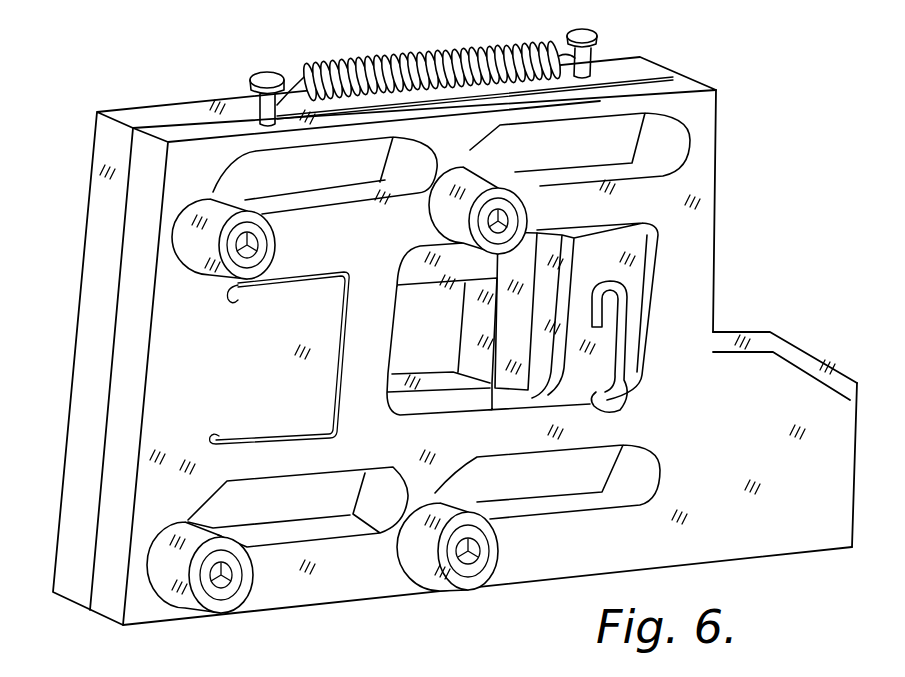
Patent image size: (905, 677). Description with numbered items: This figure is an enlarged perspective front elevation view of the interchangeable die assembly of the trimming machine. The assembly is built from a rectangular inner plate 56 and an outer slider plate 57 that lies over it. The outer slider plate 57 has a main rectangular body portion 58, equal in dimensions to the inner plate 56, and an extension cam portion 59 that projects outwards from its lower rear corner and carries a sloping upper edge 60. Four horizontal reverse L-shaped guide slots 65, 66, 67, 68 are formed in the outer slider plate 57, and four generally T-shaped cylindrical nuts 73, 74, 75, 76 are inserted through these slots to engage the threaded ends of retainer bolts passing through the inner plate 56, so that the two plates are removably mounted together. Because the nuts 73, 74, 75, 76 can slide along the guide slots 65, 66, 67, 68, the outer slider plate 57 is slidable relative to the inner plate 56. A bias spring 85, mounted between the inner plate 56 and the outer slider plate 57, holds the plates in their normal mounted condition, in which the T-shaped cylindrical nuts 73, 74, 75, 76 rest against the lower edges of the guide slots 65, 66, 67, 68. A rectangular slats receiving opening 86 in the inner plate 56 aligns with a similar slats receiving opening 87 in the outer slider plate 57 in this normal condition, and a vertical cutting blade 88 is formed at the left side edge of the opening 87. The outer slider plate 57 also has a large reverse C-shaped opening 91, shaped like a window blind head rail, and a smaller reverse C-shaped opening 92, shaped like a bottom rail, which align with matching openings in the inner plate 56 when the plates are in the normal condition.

The rectangular inner plate 56 is at (140, 107).
The outer slider plate 57 is at (140, 178).
The main rectangular body portion 58 is at (175, 188).
The extension cam portion 59 is at (830, 436).
The sloping upper edge 60 is at (797, 352).
The horizontal reverse L-shaped guide slot 65 is at (267, 163).
The horizontal reverse L-shaped guide slot 66 is at (630, 127).
The horizontal reverse L-shaped guide slot 67 is at (598, 500).
The horizontal reverse L-shaped guide slot 68 is at (328, 527).
The T-shaped cylindrical nut 73 is at (193, 243).
The T-shaped cylindrical nut 74 is at (510, 218).
The T-shaped cylindrical nut 75 is at (490, 558).
The T-shaped cylindrical nut 76 is at (162, 565).
The bias spring 85 is at (390, 62).
The rectangular slats receiving opening 86 is at (413, 317).
The rectangular slats receiving opening 87 is at (635, 270).
The vertical cutting blade 88 is at (516, 380).
The large reverse C-shaped opening 91 is at (213, 443).
The smaller reverse C-shaped opening 92 is at (627, 323).